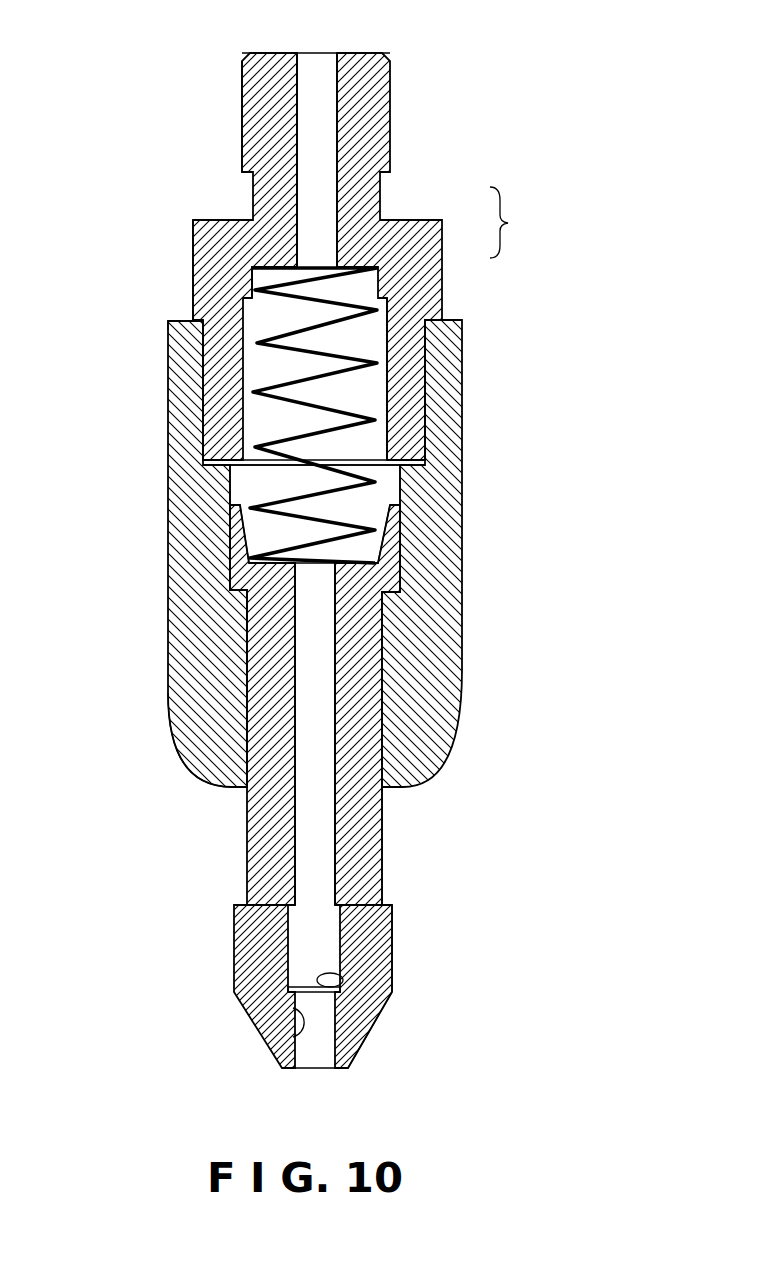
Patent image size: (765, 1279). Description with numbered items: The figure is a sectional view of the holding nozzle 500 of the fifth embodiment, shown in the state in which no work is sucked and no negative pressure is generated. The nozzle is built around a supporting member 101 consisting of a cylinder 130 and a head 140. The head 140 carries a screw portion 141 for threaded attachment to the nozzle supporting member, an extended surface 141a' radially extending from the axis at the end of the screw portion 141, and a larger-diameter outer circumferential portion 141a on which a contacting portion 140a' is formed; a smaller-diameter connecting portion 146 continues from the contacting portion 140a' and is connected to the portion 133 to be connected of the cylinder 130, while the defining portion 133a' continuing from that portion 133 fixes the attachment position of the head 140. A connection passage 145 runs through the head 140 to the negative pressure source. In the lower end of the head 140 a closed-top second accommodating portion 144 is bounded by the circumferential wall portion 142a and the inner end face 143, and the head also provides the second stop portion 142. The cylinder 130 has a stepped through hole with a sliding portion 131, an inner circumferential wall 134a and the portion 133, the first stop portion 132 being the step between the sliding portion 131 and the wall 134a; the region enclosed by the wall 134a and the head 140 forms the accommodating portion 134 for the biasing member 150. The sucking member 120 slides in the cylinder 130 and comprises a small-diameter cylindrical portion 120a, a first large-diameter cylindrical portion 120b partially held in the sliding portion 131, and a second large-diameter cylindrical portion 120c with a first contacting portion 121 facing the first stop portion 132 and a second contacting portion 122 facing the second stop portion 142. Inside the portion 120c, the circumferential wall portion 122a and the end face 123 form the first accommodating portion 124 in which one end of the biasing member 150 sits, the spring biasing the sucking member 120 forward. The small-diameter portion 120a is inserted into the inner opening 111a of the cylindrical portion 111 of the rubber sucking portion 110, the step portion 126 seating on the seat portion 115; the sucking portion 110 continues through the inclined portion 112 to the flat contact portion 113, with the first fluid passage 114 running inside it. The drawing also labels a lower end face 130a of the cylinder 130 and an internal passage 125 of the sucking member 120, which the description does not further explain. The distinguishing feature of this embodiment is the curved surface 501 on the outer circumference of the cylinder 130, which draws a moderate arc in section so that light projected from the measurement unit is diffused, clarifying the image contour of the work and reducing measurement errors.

The holding nozzle 500 is at (191, 59).
The supporting member 101 is at (521, 222).
The head 140 is at (357, 203).
The contacting portion 140a' is at (351, 379).
The screw portion 141 is at (242, 100).
The outer circumferential portion 141a is at (148, 255).
The extended surface 141a' is at (194, 186).
The inner end face 143 is at (242, 278).
The second accommodating portion 144 is at (203, 378).
The connection passage 145 is at (318, 70).
The connecting portion 146 is at (203, 423).
The second stop portion 142 is at (220, 447).
The circumferential wall portion 142a is at (220, 430).
The cylinder 130 is at (460, 320).
The housing lower end face 130a is at (238, 789).
The sliding portion 131 is at (247, 630).
The first stop portion 132 is at (220, 566).
The portion to be connected 133 is at (205, 370).
The defining portion 133a' is at (140, 289).
The accommodating portion 134 is at (227, 468).
The inner circumferential wall 134a is at (230, 478).
The biasing member 150 is at (168, 321).
The sucking member 120 is at (260, 843).
The small-diameter cylindrical portion 120a is at (350, 943).
The first large-diameter cylindrical portion 120b is at (383, 837).
The second large-diameter cylindrical portion 120c is at (403, 590).
The first contacting portion 121 is at (405, 600).
The second contacting portion 122 is at (233, 522).
The circumferential wall portion 122a is at (232, 514).
The end face 123 is at (235, 538).
The first accommodating portion 124 is at (372, 542).
The fuel passage 125 is at (312, 732).
The step portion 126 is at (235, 905).
The curved surface 501 is at (190, 755).
The sucking portion 110 is at (250, 967).
The cylindrical portion 111 is at (392, 953).
The inner opening 111a is at (345, 985).
The inclined portion 112 is at (370, 1020).
The contact portion 113 is at (333, 1070).
The first fluid passage 114 is at (307, 1018).
The seat portion 115 is at (363, 890).